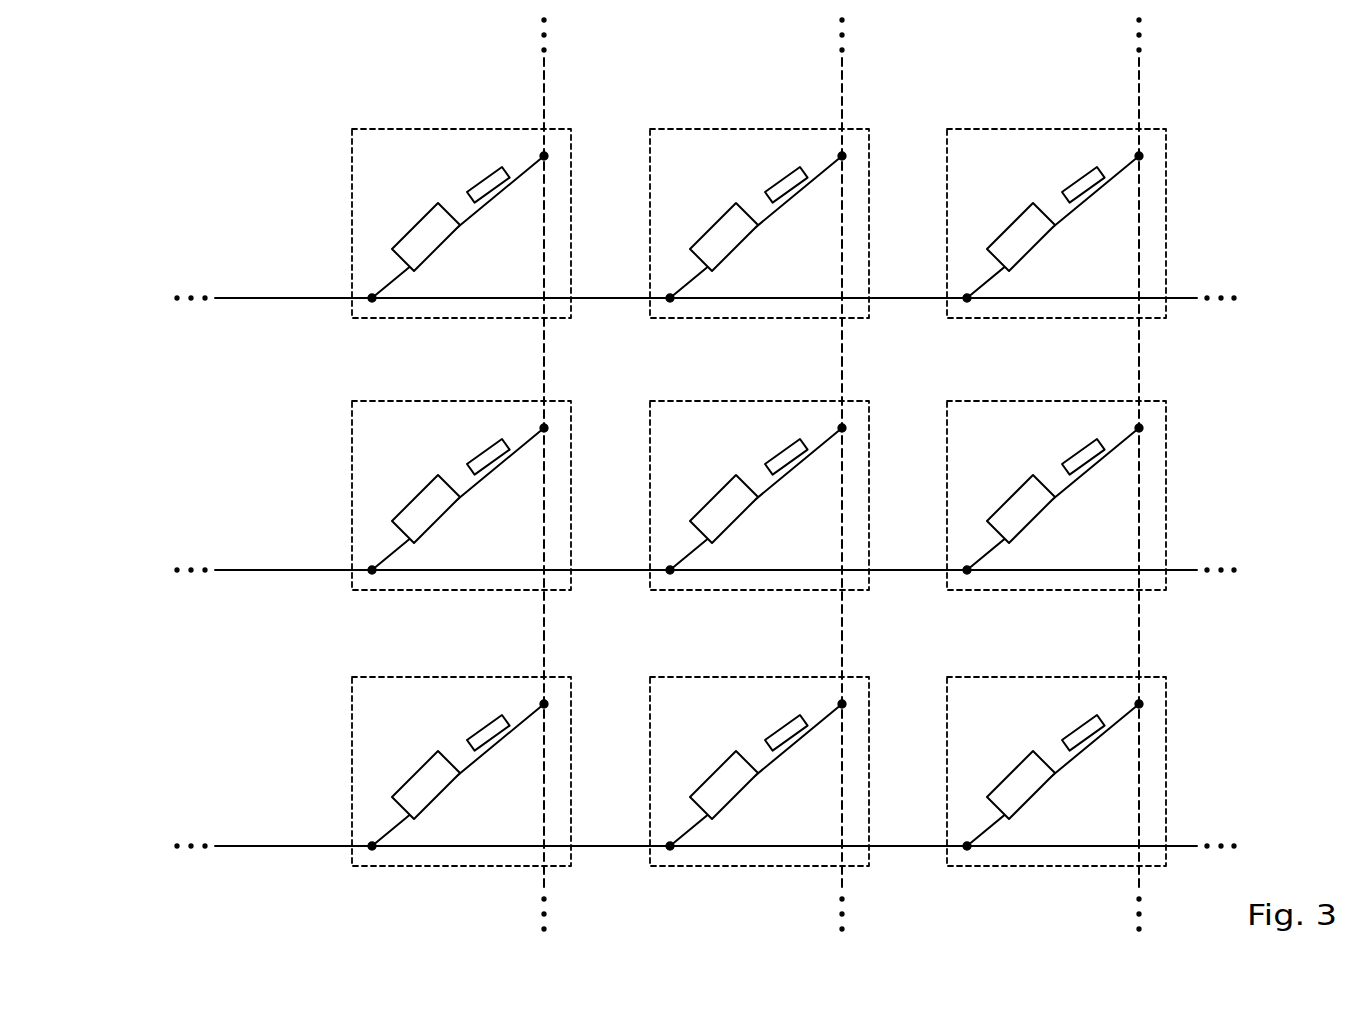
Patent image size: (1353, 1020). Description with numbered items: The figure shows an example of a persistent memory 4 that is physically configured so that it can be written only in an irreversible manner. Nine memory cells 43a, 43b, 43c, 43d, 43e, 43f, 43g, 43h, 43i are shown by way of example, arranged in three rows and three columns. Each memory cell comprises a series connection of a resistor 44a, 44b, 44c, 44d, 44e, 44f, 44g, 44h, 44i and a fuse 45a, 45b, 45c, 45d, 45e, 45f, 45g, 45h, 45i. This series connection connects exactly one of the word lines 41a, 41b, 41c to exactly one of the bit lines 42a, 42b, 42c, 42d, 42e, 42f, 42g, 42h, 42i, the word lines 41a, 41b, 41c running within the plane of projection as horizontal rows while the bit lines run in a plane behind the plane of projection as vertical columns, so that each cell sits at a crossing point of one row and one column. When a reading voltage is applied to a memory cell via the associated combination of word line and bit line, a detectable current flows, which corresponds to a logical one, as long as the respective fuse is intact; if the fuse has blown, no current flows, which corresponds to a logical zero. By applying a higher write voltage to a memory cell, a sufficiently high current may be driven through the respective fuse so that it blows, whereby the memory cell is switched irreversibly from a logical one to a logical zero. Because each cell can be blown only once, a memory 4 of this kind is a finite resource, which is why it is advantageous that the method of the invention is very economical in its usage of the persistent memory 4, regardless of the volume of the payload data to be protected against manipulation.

The persistent memory 4 is at (173, 148).
The word line 41a is at (284, 298).
The word line 41b is at (284, 570).
The word line 41c is at (284, 846).
The bit line 42a is at (493, 208).
The bit line 42b is at (791, 208).
The bit line 42c is at (1088, 208).
The bit line 42d is at (493, 484).
The bit line 42e is at (791, 484).
The bit line 42f is at (1088, 484).
The bit line 42g is at (493, 750).
The bit line 42h is at (791, 750).
The bit line 42i is at (1088, 750).
The memory cell 43a is at (428, 191).
The memory cell 43b is at (726, 191).
The memory cell 43c is at (1023, 191).
The memory cell 43d is at (428, 463).
The memory cell 43e is at (726, 463).
The memory cell 43f is at (1023, 463).
The memory cell 43g is at (428, 739).
The memory cell 43h is at (726, 739).
The memory cell 43i is at (1023, 739).
The resistor 44a is at (411, 210).
The resistor 44b is at (709, 210).
The resistor 44c is at (1006, 210).
The resistor 44d is at (411, 482).
The resistor 44e is at (709, 482).
The resistor 44f is at (1006, 482).
The resistor 44g is at (411, 758).
The resistor 44h is at (709, 758).
The resistor 44i is at (1006, 758).
The fuse 45a is at (494, 228).
The fuse 45b is at (792, 228).
The fuse 45c is at (1089, 228).
The fuse 45d is at (494, 500).
The fuse 45e is at (792, 500).
The fuse 45f is at (1090, 500).
The fuse 45g is at (494, 776).
The fuse 45h is at (792, 776).
The fuse 45i is at (1089, 776).